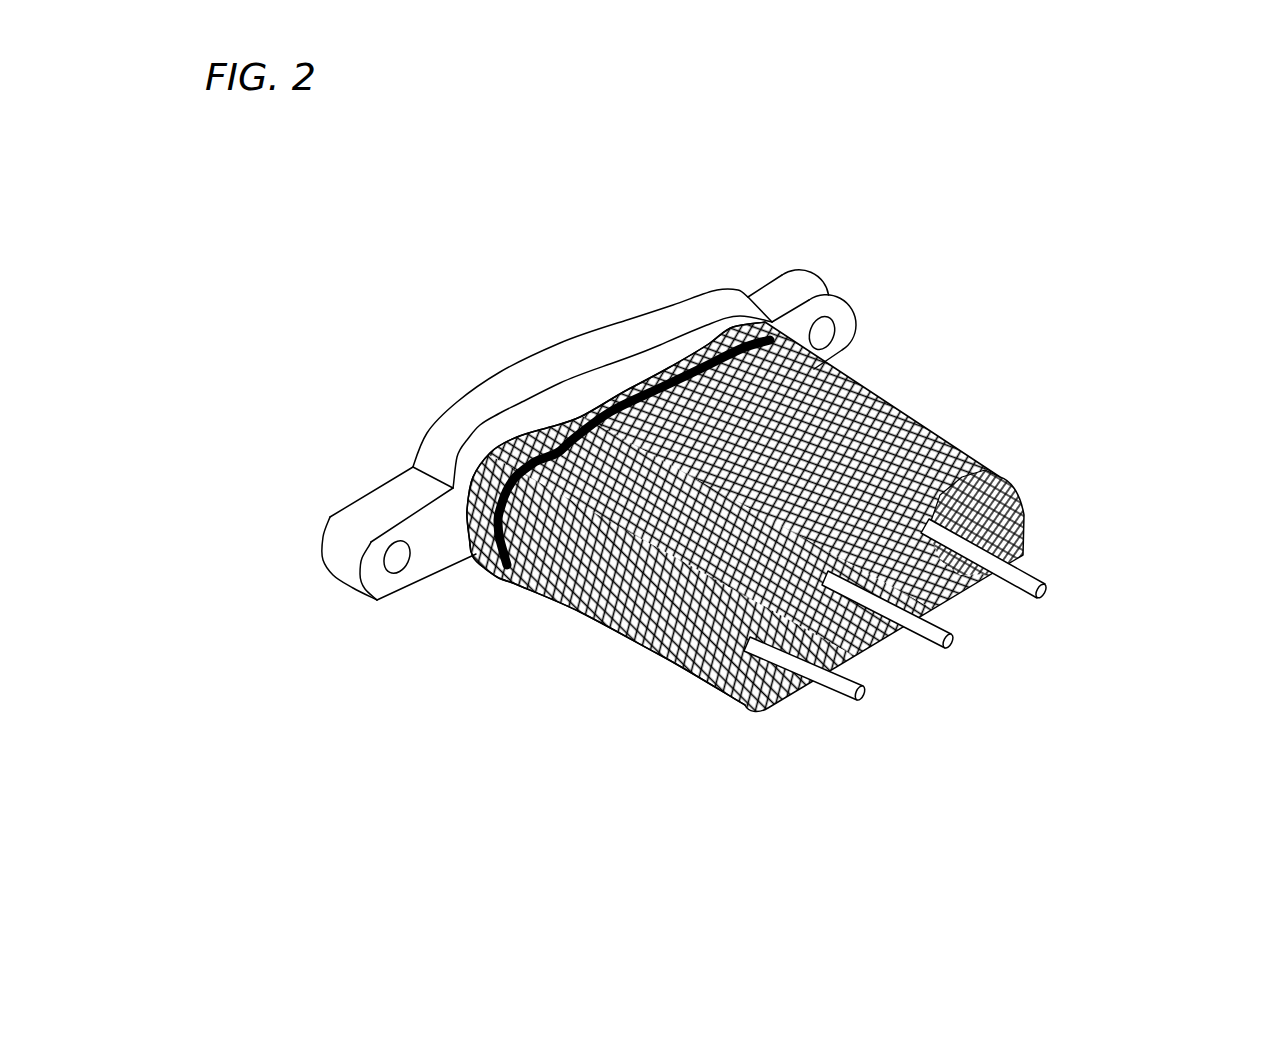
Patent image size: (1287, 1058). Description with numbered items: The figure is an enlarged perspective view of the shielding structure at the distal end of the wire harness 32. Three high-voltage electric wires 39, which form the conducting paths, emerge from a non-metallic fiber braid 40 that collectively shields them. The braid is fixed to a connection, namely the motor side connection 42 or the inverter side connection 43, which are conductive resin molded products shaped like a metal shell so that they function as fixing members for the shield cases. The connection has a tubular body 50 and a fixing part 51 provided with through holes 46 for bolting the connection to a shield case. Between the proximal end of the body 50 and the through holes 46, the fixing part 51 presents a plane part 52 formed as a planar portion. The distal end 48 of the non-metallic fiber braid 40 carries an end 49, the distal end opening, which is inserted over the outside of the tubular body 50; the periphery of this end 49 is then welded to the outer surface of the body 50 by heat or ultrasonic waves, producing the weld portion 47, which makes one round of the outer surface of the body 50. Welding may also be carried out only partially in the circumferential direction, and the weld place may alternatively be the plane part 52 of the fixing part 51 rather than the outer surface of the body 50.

The wire harness 32 is at (724, 450).
The high-voltage electric wires 39 is at (870, 703).
The non-metallic fiber braid 40 is at (966, 445).
The motor side connection 42 is at (592, 308).
The inverter side connection 43 is at (687, 306).
The through hole 46 is at (833, 333).
The weld portion 47 is at (659, 392).
The distal end 48 is at (582, 608).
The end 49 is at (553, 400).
The body 50 is at (510, 443).
The fixing part 51 is at (800, 280).
The plane part 52 is at (720, 313).